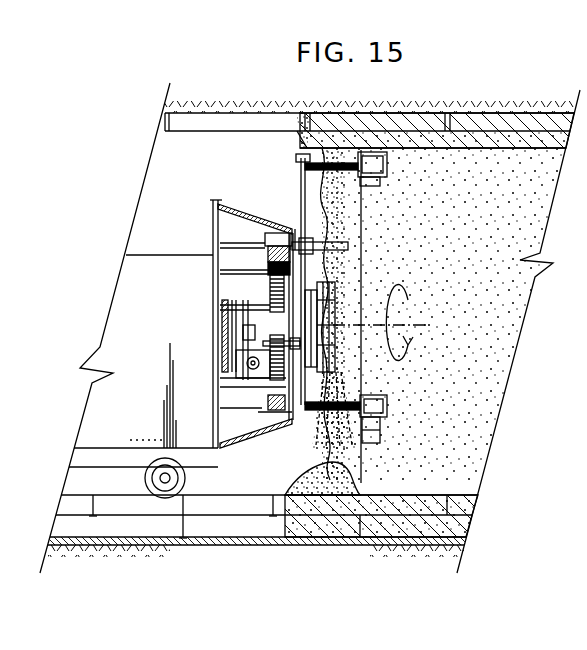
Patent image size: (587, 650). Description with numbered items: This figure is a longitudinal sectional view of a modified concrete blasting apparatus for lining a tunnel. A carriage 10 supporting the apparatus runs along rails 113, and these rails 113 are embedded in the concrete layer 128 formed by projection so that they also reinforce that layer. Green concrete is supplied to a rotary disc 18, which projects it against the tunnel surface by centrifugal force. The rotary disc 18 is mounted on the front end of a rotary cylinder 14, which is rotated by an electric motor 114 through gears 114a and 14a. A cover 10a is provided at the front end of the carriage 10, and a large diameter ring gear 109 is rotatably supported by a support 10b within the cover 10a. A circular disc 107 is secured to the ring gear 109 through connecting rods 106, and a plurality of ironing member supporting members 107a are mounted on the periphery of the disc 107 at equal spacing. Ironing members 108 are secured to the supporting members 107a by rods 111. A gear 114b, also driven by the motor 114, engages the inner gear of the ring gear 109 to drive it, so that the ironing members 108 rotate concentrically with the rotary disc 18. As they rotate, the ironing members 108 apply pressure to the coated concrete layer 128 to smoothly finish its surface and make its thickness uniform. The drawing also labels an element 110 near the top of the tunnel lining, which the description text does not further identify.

The carriage 10 is at (112, 425).
The cover 10a is at (248, 435).
The support 10b is at (278, 236).
The rotary cylinder 14 is at (258, 312).
The gear 14a is at (222, 318).
The rotary disc 18 is at (335, 310).
The connecting rods 106 is at (318, 267).
The circular disc 107 is at (305, 278).
The ironing member supporting members 107a is at (298, 184).
The ironing members 108 is at (352, 150).
The ring gear 109 is at (268, 262).
The top slab cover 110 is at (271, 113).
The rods 111 is at (338, 186).
The rails 113 is at (225, 495).
The electric motor 114 is at (238, 365).
The gear 114a is at (230, 345).
The gear 114b is at (288, 338).
The concrete layer 128 is at (430, 126).